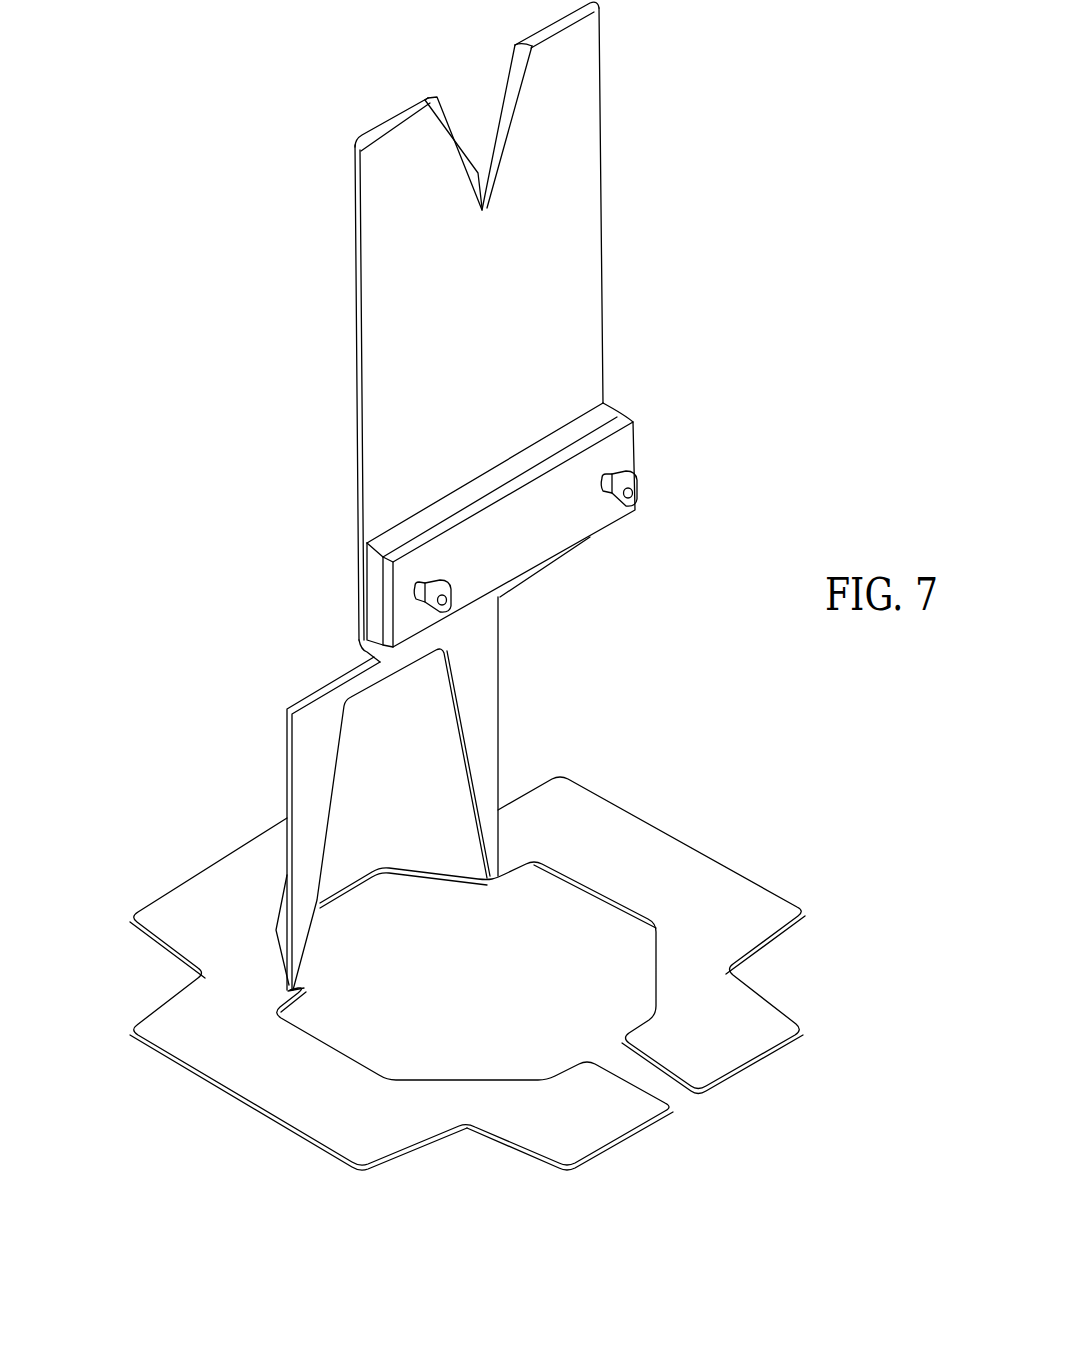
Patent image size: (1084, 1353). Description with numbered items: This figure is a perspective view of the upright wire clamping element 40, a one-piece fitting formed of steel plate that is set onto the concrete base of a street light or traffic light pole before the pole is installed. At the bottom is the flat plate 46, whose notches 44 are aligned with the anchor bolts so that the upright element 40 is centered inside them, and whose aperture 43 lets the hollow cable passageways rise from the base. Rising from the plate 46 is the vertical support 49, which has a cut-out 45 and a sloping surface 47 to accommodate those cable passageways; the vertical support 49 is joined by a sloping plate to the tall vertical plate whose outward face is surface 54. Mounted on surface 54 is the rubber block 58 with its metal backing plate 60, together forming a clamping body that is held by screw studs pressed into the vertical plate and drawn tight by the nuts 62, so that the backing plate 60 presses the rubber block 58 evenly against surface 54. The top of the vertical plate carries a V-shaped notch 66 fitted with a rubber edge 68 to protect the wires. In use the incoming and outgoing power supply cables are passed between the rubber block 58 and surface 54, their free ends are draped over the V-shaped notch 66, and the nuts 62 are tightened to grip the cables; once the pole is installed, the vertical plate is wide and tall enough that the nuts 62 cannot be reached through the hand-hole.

The upright element 40 is at (285, 540).
The aperture 43 is at (462, 1015).
The notches 44 is at (160, 976).
The cut-out 45 is at (405, 940).
The plate 46 is at (273, 1095).
The sloping surface 47 is at (440, 774).
The vertical support 49 is at (300, 760).
The surface 54 is at (505, 329).
The rubber block 58 is at (605, 412).
The metal backing plate 60 is at (623, 445).
The nuts 62 is at (632, 480).
The V-shaped notch 66 is at (468, 83).
The rubber edge 68 is at (440, 133).